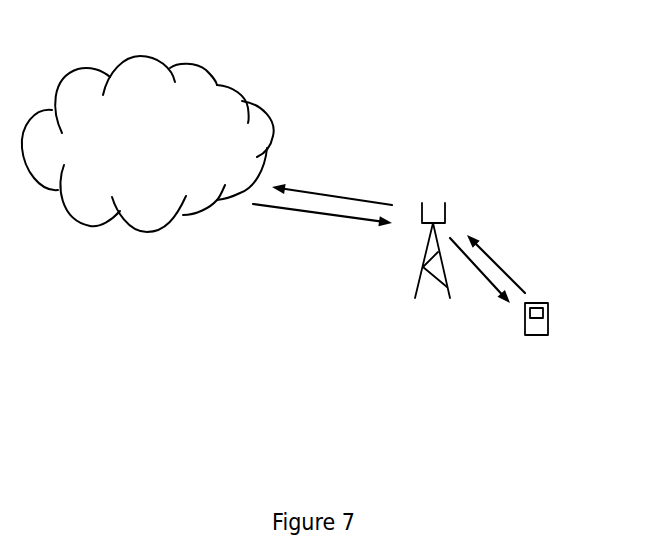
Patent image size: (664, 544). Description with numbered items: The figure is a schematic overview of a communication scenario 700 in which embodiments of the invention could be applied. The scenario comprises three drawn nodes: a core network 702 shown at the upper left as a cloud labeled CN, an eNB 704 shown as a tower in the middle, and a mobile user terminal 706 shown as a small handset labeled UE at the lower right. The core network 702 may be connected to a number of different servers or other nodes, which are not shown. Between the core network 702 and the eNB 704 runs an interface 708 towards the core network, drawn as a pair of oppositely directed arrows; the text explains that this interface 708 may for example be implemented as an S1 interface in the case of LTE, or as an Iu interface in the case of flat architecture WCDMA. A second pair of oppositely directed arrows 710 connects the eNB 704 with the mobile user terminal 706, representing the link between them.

The communication scenario 700 is at (507, 78).
The core network 702 is at (233, 90).
The eNB 704 is at (415, 271).
The mobile user terminal 706 is at (548, 315).
The interface 708 is at (323, 192).
The communication link between eNB and UE 710 is at (502, 260).